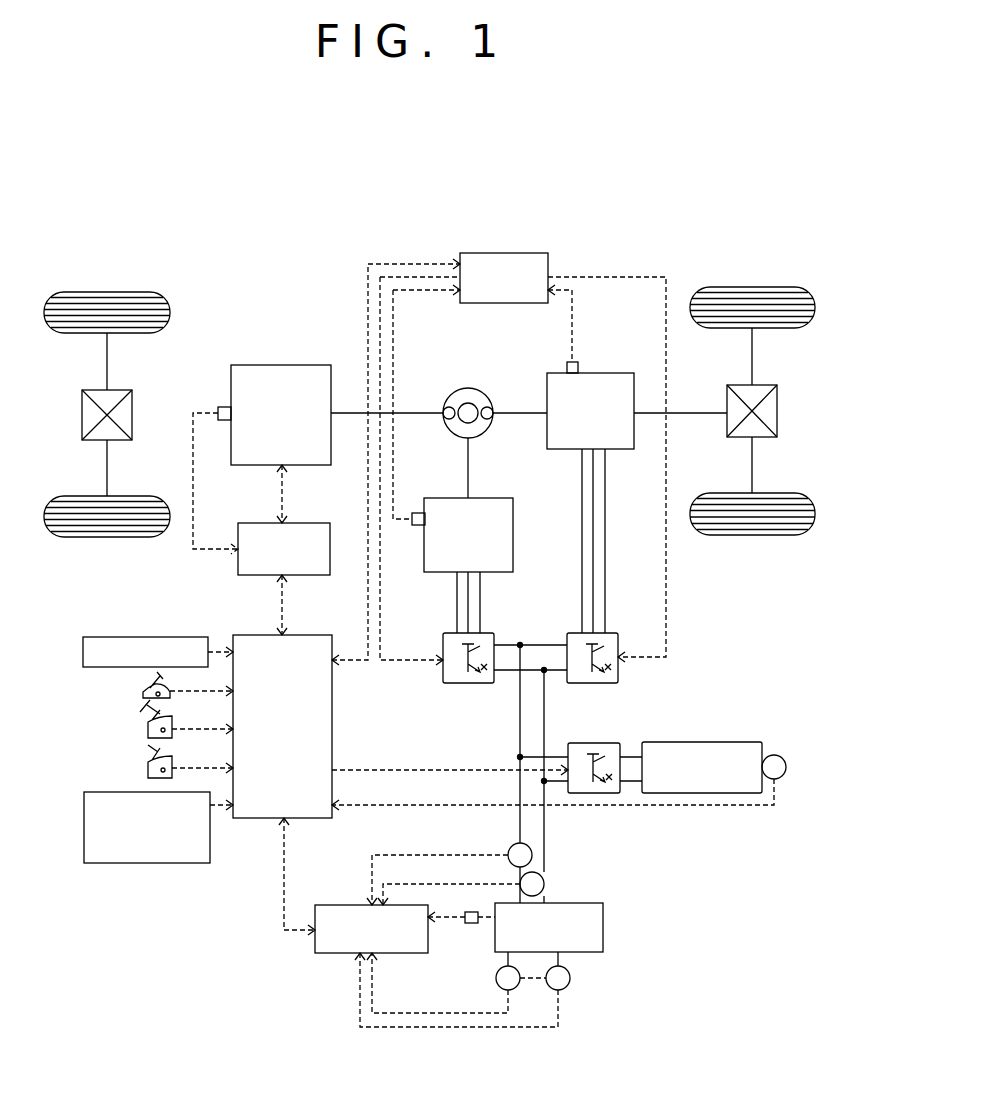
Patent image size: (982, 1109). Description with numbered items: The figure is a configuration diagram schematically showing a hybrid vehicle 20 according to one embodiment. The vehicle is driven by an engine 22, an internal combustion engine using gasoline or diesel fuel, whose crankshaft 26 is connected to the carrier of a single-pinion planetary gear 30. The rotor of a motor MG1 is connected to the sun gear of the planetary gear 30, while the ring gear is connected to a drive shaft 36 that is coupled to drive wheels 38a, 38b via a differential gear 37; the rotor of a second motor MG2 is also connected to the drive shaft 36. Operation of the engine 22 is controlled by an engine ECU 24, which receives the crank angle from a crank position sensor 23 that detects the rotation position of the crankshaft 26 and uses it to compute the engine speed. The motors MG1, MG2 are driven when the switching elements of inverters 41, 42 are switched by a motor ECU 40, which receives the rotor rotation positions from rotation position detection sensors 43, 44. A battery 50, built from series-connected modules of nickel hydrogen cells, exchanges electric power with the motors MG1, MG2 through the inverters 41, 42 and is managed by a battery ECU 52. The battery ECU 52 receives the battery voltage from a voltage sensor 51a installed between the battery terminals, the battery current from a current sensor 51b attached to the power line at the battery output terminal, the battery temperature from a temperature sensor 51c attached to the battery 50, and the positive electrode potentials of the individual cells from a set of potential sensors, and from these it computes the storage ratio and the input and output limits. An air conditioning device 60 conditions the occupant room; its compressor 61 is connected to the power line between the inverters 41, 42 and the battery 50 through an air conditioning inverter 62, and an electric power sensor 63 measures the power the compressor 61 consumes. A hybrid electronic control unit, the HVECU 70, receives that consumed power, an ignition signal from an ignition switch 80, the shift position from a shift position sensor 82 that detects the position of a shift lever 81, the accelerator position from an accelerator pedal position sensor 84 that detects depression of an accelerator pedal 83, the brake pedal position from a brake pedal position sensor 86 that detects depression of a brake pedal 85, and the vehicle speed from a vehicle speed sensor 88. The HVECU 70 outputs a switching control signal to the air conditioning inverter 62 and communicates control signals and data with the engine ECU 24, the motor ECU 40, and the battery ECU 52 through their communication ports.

The hybrid vehicle 20 is at (632, 210).
The engine 22 is at (301, 364).
The crank position sensor 23 is at (226, 406).
The engine electronic control unit 24 is at (315, 522).
The crankshaft 26 is at (341, 412).
The planetary gear 30 is at (468, 388).
The drive shaft 36 is at (697, 412).
The differential gear 37 is at (760, 384).
The drive wheel 38a is at (752, 286).
The drive wheel 38b is at (752, 537).
The motor electronic control unit 40 is at (516, 252).
The inverter 41 is at (490, 632).
The inverter 42 is at (612, 632).
The rotation position detection sensor 43 is at (418, 512).
The rotation position detection sensor 44 is at (567, 368).
The motor MG1 is at (497, 497).
The motor MG2 is at (612, 372).
The battery 50 is at (603, 927).
The voltage sensor 51a is at (545, 884).
The current sensor 51b is at (532, 855).
The temperature sensor 51c is at (471, 924).
The battery electronic control unit 52 is at (366, 900).
The air conditioning device 60 is at (695, 675).
The compressor 61 is at (674, 741).
The air conditioning inverter 62 is at (593, 742).
The electric power sensor 63 is at (775, 755).
The hybrid electronic control unit 70 is at (305, 634).
The ignition switch 80 is at (83, 650).
The shift lever 81 is at (140, 683).
The shift position sensor 82 is at (140, 697).
The accelerator pedal 83 is at (147, 716).
The accelerator pedal position sensor 84 is at (147, 731).
The brake pedal 85 is at (147, 757).
The brake pedal position sensor 86 is at (147, 772).
The vehicle speed sensor 88 is at (84, 808).